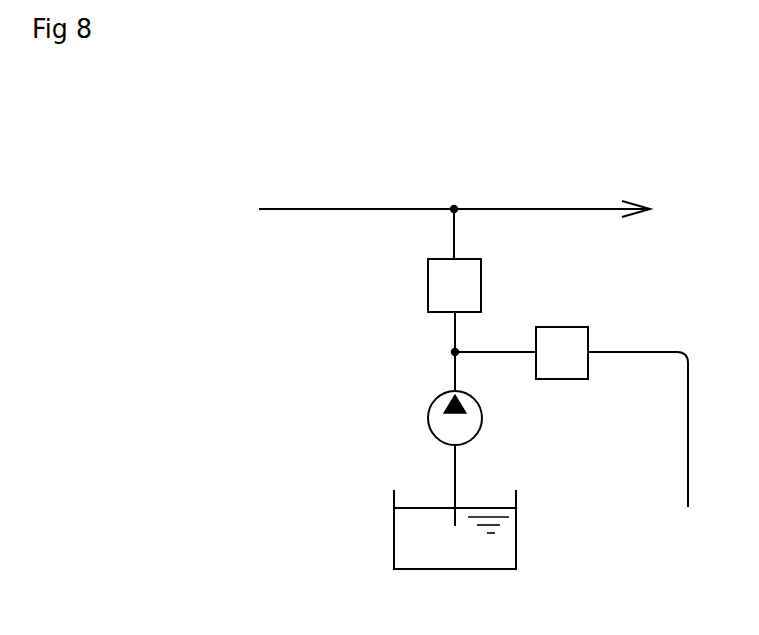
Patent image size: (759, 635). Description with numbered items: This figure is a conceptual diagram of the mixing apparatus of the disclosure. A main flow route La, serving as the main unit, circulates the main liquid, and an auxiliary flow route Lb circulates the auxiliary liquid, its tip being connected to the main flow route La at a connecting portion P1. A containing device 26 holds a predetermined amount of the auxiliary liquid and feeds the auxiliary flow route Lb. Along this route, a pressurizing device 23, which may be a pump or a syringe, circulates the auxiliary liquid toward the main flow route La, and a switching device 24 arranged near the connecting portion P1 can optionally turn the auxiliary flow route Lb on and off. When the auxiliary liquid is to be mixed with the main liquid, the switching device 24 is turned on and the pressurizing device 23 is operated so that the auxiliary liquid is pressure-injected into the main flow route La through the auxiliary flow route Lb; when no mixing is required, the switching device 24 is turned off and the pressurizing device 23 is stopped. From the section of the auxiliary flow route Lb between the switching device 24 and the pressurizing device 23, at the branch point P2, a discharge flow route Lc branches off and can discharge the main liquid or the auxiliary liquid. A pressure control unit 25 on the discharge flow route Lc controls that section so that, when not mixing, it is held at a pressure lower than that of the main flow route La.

The pressurizing device 23 is at (428, 425).
The switching device 24 is at (428, 287).
The pressure control unit 25 is at (569, 326).
The containing device 26 is at (394, 551).
The connecting portion P1 is at (453, 206).
The junction point P2 is at (452, 352).
The main flow route La is at (547, 207).
The auxiliary flow route Lb is at (452, 467).
The discharge flow route Lc is at (628, 350).